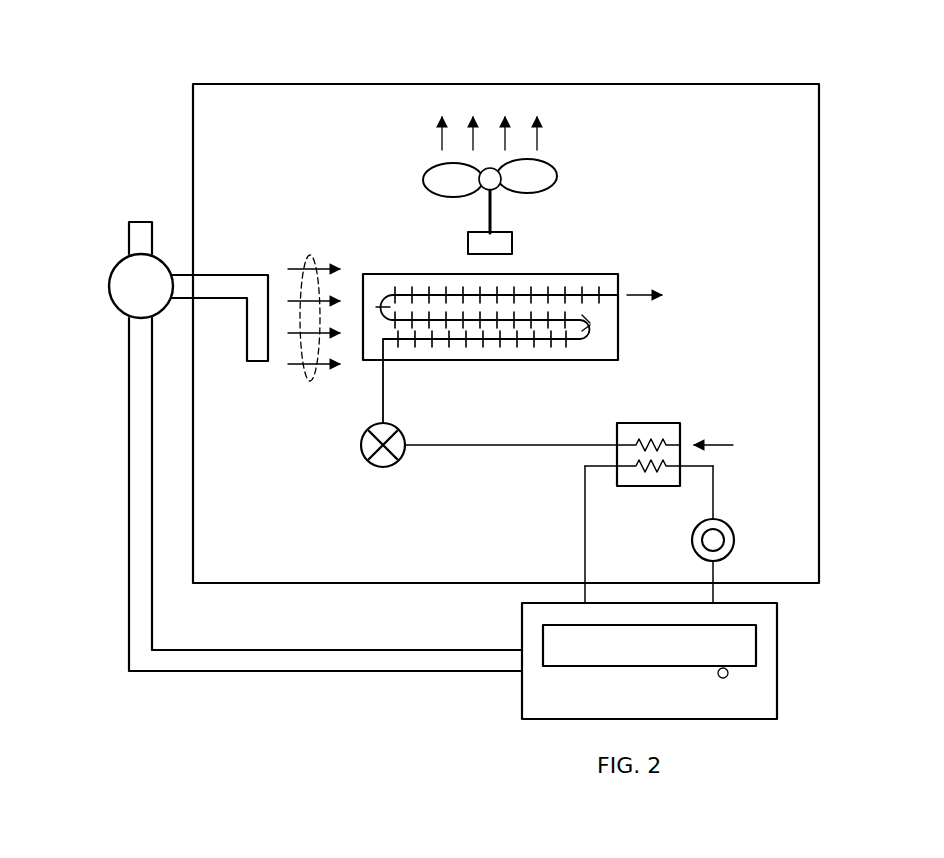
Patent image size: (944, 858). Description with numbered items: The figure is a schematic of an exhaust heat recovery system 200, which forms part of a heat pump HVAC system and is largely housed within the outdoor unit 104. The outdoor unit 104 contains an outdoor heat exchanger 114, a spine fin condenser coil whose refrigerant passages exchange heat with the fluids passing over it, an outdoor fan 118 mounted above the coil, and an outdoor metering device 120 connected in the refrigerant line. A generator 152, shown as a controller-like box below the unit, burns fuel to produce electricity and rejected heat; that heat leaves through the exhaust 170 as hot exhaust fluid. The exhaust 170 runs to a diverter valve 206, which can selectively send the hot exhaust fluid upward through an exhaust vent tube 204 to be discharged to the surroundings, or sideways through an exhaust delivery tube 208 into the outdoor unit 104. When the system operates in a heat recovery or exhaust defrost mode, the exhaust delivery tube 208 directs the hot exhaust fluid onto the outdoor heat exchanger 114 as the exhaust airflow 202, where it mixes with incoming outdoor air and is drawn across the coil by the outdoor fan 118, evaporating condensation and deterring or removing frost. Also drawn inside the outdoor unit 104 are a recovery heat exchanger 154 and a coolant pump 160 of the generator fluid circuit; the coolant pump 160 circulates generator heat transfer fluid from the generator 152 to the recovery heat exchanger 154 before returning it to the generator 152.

The exhaust heat recovery system 200 is at (104, 66).
The outdoor unit 104 is at (728, 82).
The outdoor fan 118 is at (425, 180).
The outdoor heat exchanger 114 is at (575, 273).
The exhaust airflow 202 is at (310, 255).
The exhaust delivery tube 208 is at (237, 273).
The exhaust vent tube 204 is at (129, 243).
The diverter valve 206 is at (110, 286).
The exhaust 170 is at (320, 672).
The outdoor metering device 120 is at (383, 467).
The recovery heat exchanger 154 is at (650, 423).
The coolant pump 160 is at (734, 540).
The generator 152 is at (777, 660).